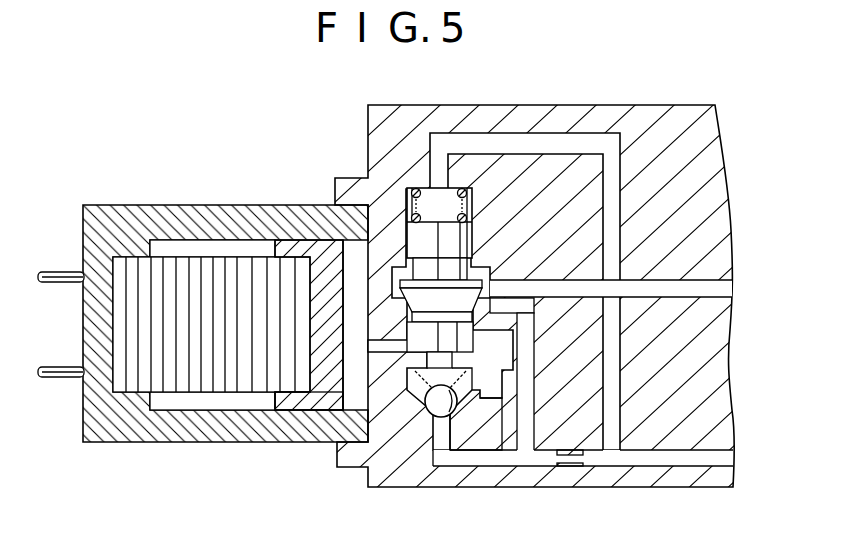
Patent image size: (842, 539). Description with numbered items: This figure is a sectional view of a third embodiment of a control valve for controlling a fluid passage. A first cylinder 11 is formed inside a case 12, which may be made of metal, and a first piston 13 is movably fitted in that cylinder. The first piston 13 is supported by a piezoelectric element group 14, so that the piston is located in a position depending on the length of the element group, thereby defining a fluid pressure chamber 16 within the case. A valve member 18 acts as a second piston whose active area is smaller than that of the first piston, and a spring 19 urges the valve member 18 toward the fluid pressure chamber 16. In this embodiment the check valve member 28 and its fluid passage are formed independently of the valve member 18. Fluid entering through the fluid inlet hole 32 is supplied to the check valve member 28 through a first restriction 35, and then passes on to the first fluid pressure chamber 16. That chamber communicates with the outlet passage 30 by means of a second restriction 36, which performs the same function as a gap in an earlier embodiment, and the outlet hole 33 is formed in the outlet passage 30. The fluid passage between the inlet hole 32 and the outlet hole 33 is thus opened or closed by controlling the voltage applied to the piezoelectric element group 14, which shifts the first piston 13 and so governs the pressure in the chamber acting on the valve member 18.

The first cylinder 11 is at (188, 247).
The case 12 is at (233, 222).
The first piston 13 is at (293, 400).
The piezoelectric element group 14 is at (190, 383).
The fluid pressure chamber 16 is at (347, 258).
The valve member 18 is at (417, 245).
The spring 19 is at (406, 205).
The check valve member 28 is at (437, 403).
The outlet passage 30 is at (456, 317).
The fluid inlet hole 32 is at (727, 452).
The outlet hole 33 is at (727, 285).
The first restriction 35 is at (572, 463).
The second restriction 36 is at (486, 388).